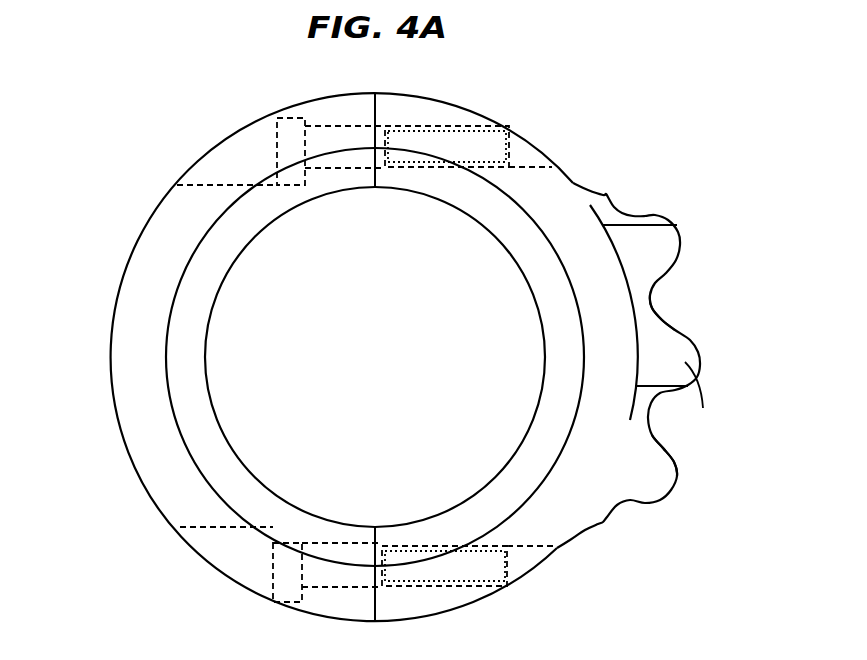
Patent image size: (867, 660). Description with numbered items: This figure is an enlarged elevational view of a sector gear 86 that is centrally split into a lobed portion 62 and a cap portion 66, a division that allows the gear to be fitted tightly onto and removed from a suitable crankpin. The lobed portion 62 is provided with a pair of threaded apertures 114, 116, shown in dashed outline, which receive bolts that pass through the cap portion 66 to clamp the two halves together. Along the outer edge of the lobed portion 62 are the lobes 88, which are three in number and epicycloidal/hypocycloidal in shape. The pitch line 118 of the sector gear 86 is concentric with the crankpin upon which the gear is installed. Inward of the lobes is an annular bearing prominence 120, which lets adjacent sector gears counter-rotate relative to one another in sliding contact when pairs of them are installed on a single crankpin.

The lobed portion 62 is at (583, 170).
The cap portion 66 is at (104, 387).
The sector gear 86 is at (106, 196).
The lobes 88 is at (663, 461).
The threaded aperture 114 is at (517, 150).
The threaded aperture 116 is at (523, 563).
The pitch line 118 is at (648, 309).
The annular bearing prominence 120 is at (528, 452).